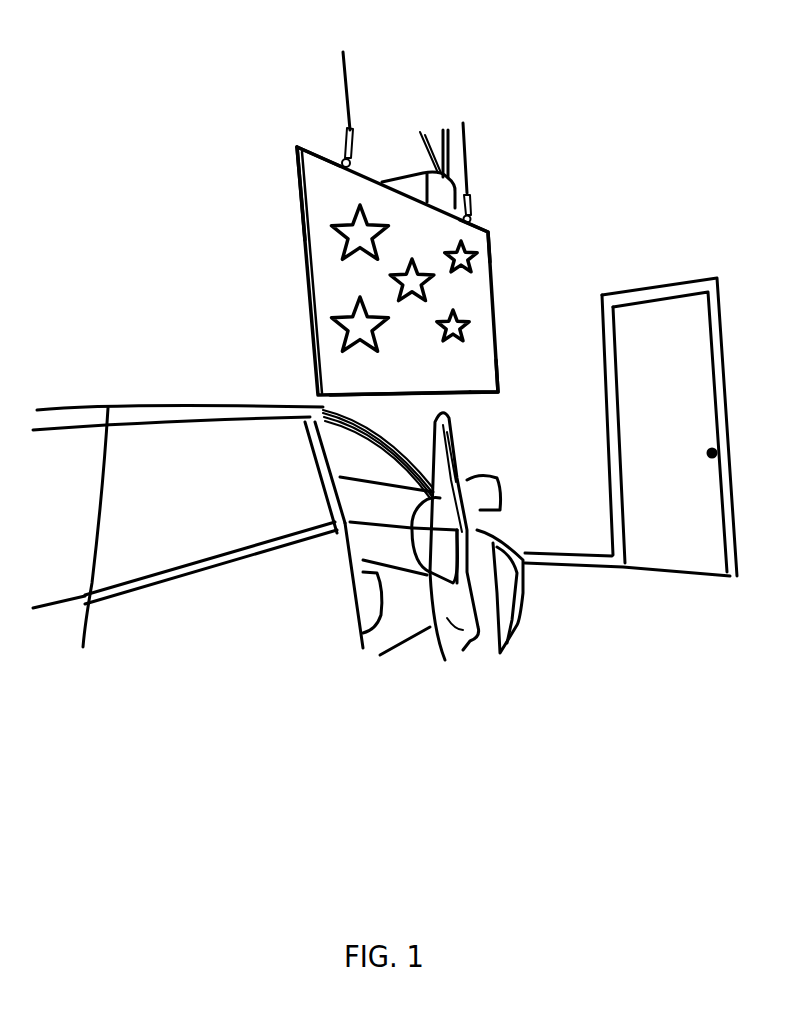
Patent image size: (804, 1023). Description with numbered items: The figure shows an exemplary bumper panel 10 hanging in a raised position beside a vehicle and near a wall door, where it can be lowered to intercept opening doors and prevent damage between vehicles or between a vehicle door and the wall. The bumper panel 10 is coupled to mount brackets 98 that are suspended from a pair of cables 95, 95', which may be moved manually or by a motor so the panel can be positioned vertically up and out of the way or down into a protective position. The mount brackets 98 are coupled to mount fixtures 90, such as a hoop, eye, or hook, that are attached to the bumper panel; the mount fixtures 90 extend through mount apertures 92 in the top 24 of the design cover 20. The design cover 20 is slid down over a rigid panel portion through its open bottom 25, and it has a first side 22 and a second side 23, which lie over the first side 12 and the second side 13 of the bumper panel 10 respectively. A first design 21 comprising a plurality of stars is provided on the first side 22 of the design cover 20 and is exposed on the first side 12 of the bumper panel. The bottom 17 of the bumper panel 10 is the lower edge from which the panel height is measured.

The bumper panel 10 is at (278, 134).
The first side of the bumper panel 12 is at (480, 267).
The second side of the bumper panel 13 is at (298, 183).
The bottom of the bumper panel 17 is at (448, 393).
The design cover 20 is at (470, 287).
The first design 21 is at (467, 327).
The first side of the design cover 22 is at (313, 190).
The second side of the design cover 23 is at (298, 228).
The top of the design cover 24 is at (490, 237).
The open bottom of the design cover 25 is at (495, 393).
The mount fixture 90 is at (370, 145).
The mount aperture 92 is at (470, 216).
The cable 95 is at (323, 78).
The cable 95' is at (494, 139).
The mount bracket 98 is at (352, 148).